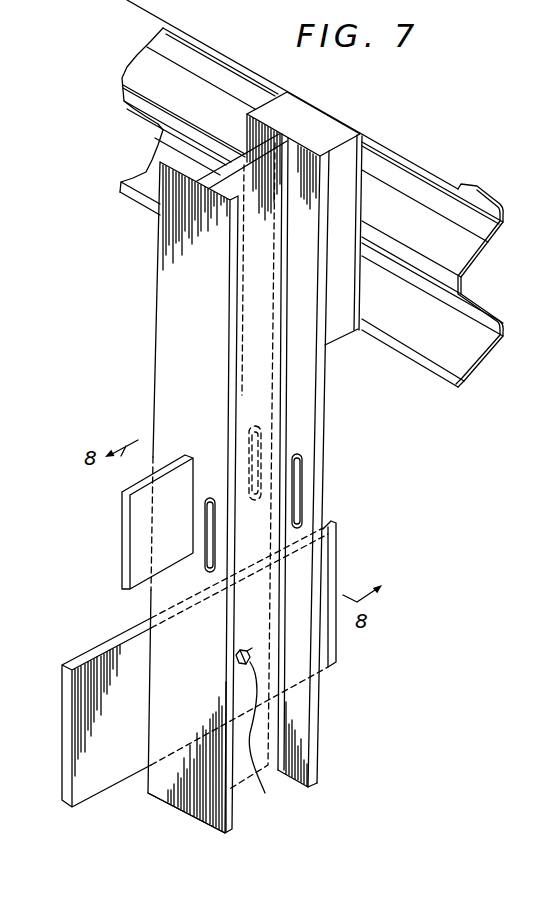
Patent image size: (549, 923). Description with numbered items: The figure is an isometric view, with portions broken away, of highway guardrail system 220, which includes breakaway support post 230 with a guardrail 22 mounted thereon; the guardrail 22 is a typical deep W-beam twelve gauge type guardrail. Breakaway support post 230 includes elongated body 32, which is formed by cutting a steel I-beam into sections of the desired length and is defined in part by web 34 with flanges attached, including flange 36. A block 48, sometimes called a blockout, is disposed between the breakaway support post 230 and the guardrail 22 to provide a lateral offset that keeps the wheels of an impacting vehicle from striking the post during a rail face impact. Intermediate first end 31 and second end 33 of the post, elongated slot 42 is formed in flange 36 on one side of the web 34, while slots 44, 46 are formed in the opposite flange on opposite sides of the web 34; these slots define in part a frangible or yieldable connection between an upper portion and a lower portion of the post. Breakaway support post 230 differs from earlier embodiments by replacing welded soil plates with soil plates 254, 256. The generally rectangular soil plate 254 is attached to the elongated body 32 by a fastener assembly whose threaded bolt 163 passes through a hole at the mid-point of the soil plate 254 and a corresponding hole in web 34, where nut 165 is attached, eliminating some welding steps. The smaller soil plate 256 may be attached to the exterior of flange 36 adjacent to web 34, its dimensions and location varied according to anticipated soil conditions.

The guardrail 22 is at (465, 164).
The highway guardrail system 220 is at (311, 193).
The block 48 is at (317, 124).
The first end 31 is at (233, 164).
The elongated body 32 is at (307, 452).
The second end 33 is at (225, 833).
The web 34 is at (250, 630).
The flange 36 is at (180, 516).
The elongated slot 42 is at (206, 498).
The slot 44 is at (253, 430).
The slot 46 is at (296, 456).
The threaded bolt 163 is at (275, 737).
The nut 165 is at (250, 658).
The breakaway support post 230 is at (224, 470).
The soil plate 254 is at (230, 671).
The soil plate 256 is at (123, 531).